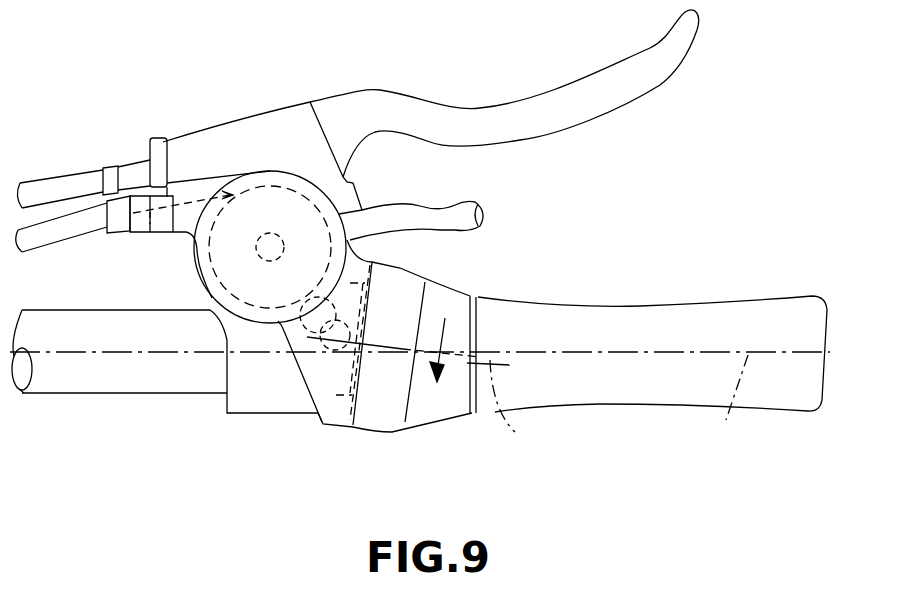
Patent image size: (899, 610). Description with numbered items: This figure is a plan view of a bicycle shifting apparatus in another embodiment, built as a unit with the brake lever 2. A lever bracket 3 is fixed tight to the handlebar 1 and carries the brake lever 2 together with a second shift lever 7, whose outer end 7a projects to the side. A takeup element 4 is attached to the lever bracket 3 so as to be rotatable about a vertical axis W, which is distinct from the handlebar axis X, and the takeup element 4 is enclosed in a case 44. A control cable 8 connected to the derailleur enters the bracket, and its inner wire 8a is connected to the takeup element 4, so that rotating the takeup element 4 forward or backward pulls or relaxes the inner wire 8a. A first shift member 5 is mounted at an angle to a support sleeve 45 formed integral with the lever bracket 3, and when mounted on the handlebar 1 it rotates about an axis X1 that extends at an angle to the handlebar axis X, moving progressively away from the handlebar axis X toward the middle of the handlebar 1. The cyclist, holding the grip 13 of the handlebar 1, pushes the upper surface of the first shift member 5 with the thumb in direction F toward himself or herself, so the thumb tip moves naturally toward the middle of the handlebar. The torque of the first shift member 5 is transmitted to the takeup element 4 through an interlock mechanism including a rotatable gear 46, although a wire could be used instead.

The handlebar 1 is at (65, 385).
The brake lever 2 is at (548, 92).
The lever bracket 3 is at (297, 108).
The takeup element 4 is at (212, 262).
The first shift member 5 is at (385, 417).
The second shift lever 7 is at (400, 203).
The adjuster lever knob 7a is at (482, 212).
The control cable 8 is at (50, 220).
The inner wire 8a is at (150, 237).
The grip 13 is at (643, 307).
The case 44 is at (272, 168).
The support sleeve 45 is at (463, 417).
The rotatable gear 46 is at (372, 333).
The vertical axis W is at (268, 244).
The force direction F is at (447, 333).
The handlebar axis X is at (732, 404).
The axis X1 is at (514, 407).